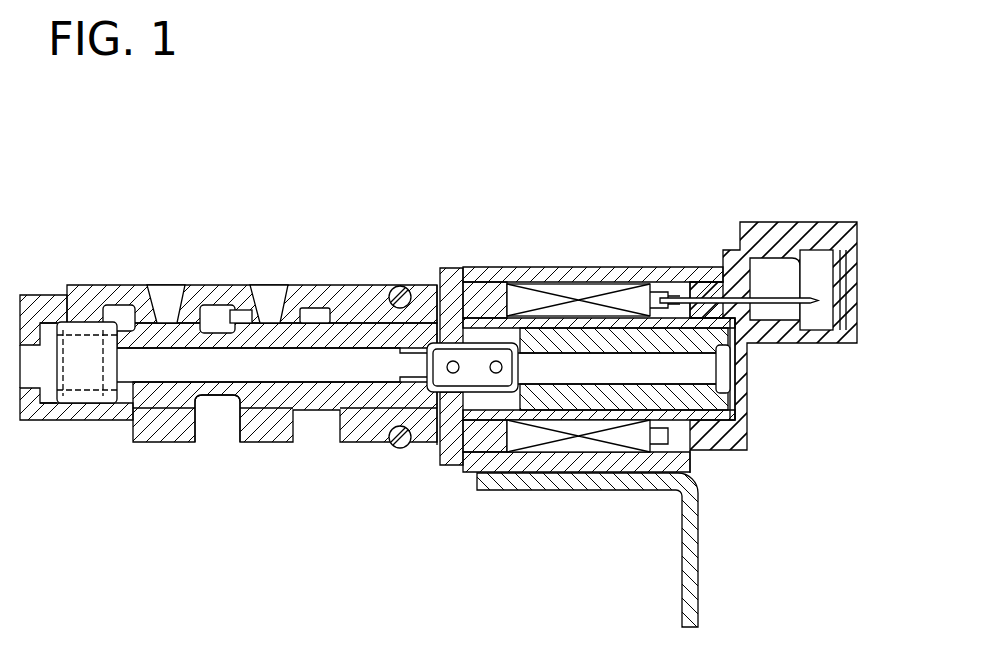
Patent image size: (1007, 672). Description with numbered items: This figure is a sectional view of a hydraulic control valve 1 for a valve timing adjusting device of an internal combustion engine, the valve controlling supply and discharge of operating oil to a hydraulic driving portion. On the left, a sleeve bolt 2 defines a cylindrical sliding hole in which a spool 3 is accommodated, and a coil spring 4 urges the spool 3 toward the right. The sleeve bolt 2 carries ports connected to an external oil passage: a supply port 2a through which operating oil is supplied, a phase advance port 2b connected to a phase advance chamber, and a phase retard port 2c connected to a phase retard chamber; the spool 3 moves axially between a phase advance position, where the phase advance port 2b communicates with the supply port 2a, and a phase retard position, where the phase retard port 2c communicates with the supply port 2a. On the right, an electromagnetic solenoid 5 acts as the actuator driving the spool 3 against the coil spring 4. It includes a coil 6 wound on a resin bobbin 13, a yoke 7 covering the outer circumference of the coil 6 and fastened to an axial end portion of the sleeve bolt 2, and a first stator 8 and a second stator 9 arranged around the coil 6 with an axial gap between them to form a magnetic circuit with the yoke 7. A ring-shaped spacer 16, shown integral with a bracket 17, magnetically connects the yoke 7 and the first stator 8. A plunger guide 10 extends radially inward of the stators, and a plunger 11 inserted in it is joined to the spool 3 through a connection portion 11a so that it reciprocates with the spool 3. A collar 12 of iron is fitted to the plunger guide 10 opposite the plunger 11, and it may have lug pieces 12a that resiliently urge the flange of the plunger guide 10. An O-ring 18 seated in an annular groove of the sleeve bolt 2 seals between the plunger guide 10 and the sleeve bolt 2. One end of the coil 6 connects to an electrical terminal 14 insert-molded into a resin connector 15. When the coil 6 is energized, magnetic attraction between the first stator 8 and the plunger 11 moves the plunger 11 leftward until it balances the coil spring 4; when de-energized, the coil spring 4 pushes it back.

The hydraulic control valve 1 is at (322, 177).
The sleeve bolt 2 is at (116, 287).
The supply port 2a is at (213, 423).
The phase advance port 2b is at (167, 290).
The phase retard port 2c is at (270, 290).
The spool 3 is at (168, 395).
The coil spring 4 is at (100, 418).
The electromagnetic solenoid 5 is at (670, 250).
The coil 6 is at (592, 280).
The yoke 7 is at (570, 272).
The first stator 8 is at (473, 277).
The second stator 9 is at (626, 280).
The plunger guide 10 is at (540, 455).
The plunger 11 is at (632, 445).
The connection portion 11a is at (470, 370).
The collar 12 is at (527, 278).
The lug pieces 12a is at (430, 278).
The resin bobbin 13 is at (578, 445).
The electrical terminal 14 is at (800, 300).
The resin connector 15 is at (775, 242).
The spacer 16 is at (485, 277).
The bracket 17 is at (695, 610).
The O-ring 18 is at (447, 266).